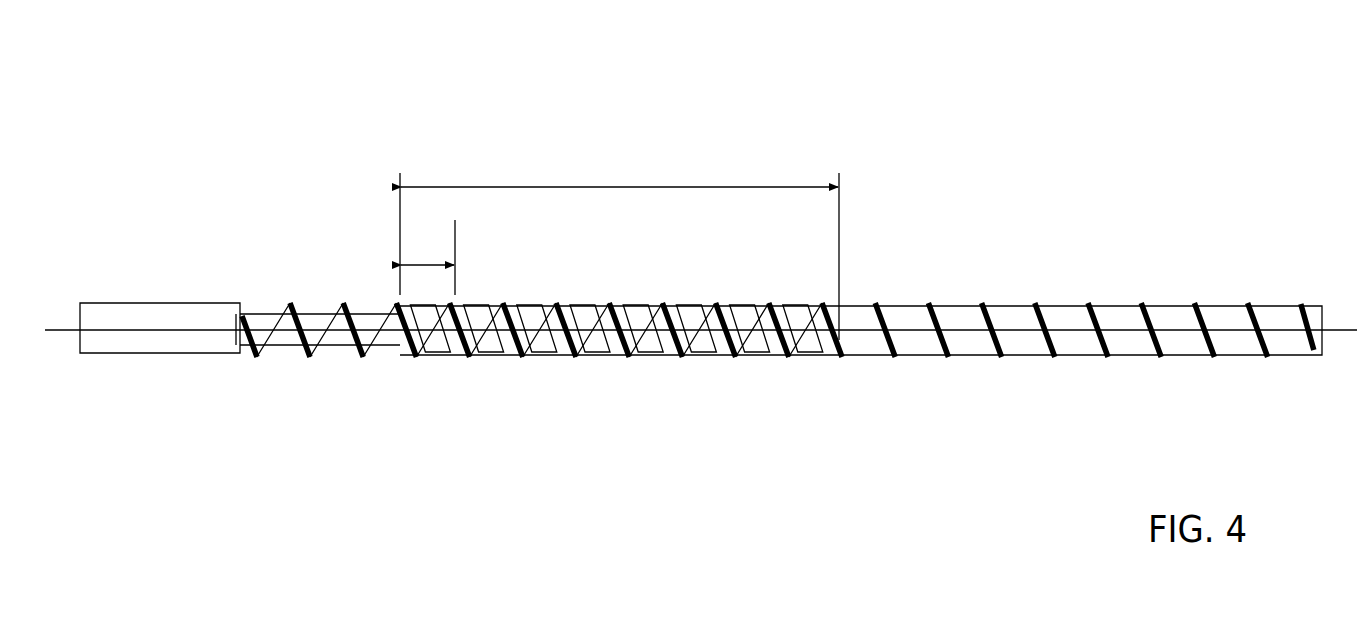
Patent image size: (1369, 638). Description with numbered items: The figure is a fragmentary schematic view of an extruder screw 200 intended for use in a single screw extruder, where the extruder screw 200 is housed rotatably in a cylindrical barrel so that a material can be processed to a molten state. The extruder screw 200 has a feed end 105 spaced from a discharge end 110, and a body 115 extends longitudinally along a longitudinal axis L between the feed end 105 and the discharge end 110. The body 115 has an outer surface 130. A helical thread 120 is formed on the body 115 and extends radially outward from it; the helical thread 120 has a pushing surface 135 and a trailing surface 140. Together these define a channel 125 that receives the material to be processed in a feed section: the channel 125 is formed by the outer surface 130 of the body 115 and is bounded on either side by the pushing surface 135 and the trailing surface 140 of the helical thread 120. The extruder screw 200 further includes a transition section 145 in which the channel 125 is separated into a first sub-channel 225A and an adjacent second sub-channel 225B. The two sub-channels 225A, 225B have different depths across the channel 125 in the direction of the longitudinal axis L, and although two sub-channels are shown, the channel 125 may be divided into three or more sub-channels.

The extruder screw 200 is at (220, 166).
The longitudinal axis L is at (180, 332).
The feed end 105 is at (195, 312).
The discharge end 110 is at (1228, 313).
The body 115 is at (273, 347).
The helical thread 120 is at (368, 353).
The channel 125 is at (425, 263).
The outer surface 130 is at (325, 322).
The pushing surface 135 is at (355, 303).
The trailing surface 140 is at (405, 357).
The transition section 145 is at (647, 187).
The first sub-channel 225A is at (492, 343).
The second sub-channel 225B is at (510, 353).